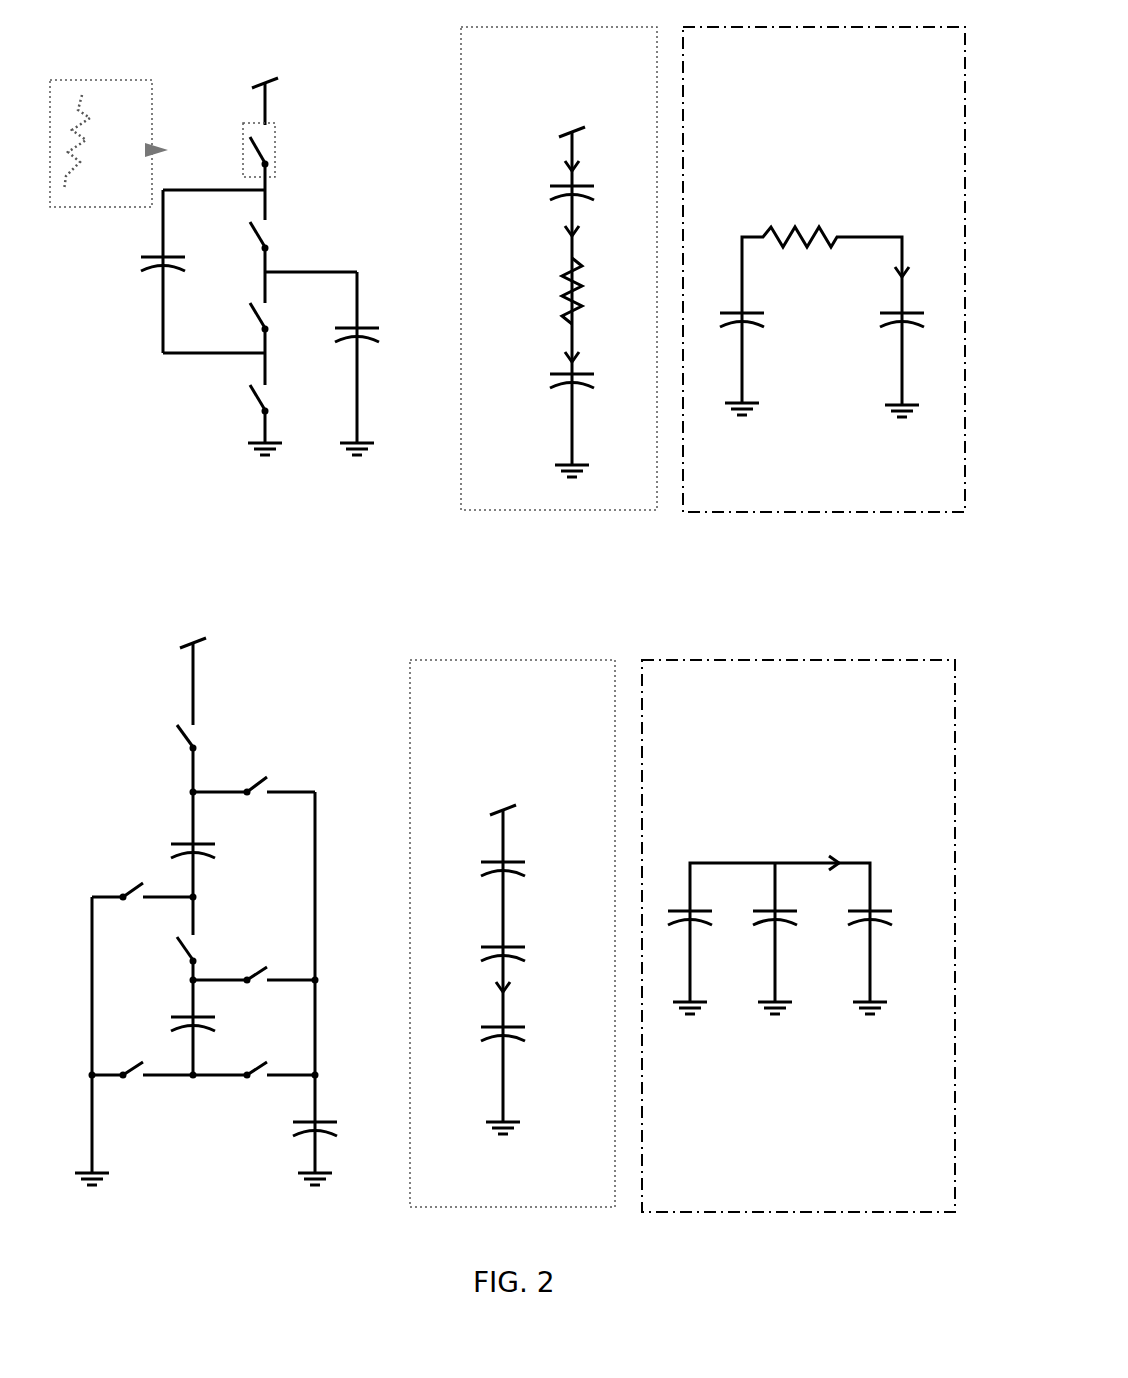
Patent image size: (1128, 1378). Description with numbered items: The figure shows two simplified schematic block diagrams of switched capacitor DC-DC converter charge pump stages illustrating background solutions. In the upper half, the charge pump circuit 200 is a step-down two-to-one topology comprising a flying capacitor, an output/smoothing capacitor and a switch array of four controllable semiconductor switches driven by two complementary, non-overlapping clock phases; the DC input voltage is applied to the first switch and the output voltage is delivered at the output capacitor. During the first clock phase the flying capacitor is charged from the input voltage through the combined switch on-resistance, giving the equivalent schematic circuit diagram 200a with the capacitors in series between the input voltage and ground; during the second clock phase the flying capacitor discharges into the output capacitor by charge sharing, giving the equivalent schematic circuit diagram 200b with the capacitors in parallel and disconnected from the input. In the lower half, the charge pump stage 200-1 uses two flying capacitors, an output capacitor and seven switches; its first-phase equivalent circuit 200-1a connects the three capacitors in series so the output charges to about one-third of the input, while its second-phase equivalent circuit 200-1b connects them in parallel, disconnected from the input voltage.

The charge pump circuit 200 is at (173, 497).
The equivalent schematic circuit diagram 200a is at (548, 520).
The equivalent schematic circuit diagram 200b is at (845, 517).
The charge pump stage 200-1 is at (177, 1222).
The equivalent schematic circuit diagram 200-1a is at (470, 1217).
The equivalent schematic circuit diagram 200-1b is at (767, 1217).